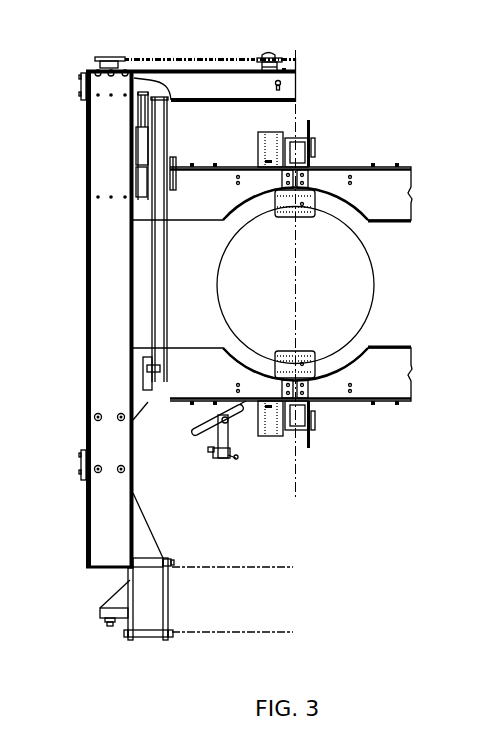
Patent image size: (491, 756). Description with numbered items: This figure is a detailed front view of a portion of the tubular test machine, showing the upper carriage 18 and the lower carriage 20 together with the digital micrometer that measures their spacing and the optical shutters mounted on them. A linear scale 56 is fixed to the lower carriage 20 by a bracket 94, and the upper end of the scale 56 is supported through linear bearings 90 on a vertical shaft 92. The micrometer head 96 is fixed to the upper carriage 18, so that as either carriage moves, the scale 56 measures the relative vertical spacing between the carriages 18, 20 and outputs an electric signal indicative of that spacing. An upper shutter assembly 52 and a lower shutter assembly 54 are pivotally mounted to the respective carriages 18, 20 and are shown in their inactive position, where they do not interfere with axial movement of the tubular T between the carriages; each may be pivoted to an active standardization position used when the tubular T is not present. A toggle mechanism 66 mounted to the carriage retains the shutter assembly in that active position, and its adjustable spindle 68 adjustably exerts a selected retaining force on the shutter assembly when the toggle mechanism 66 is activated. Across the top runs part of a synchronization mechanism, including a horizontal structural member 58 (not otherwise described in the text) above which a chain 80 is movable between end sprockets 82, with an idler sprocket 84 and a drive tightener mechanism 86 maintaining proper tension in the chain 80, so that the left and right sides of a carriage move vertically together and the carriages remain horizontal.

The upper carriage 18 is at (294, 212).
The lower carriage 20 is at (294, 359).
The tubular T is at (375, 285).
The upper shutter assembly 52 is at (316, 151).
The lower shutter assembly 54 is at (302, 423).
The linear scale 56 is at (90, 239).
The support beam 58 is at (191, 98).
The toggle mechanism 66 is at (193, 444).
The adjustable spindle 68 is at (256, 470).
The chain 80 is at (205, 34).
The end sprocket 82 is at (81, 42).
The idler sprocket 84 is at (237, 39).
The drive tightener mechanism 86 is at (301, 35).
The linear bearings 90 is at (80, 142).
The vertical shaft 92 is at (80, 198).
The bracket 94 is at (86, 387).
The micrometer head 96 is at (201, 178).